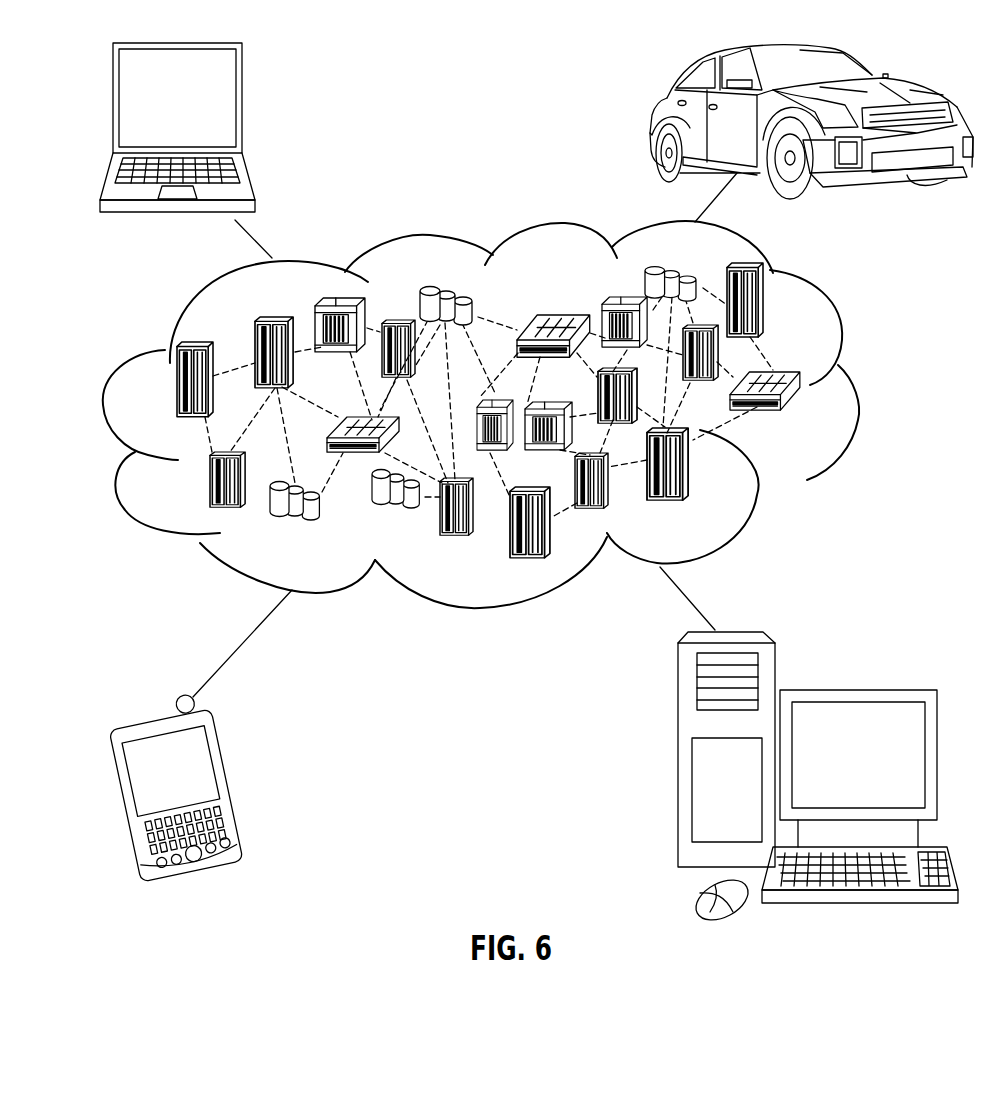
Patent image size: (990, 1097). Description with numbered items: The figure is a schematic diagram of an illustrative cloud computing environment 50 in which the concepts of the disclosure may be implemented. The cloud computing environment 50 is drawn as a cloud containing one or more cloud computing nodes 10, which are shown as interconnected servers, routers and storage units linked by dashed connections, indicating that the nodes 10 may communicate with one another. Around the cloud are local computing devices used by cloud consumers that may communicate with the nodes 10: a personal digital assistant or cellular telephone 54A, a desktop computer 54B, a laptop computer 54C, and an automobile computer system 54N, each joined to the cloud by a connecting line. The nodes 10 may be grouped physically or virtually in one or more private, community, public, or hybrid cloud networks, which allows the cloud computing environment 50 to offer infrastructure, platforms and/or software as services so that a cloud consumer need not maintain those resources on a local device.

The cloud computing nodes 10 is at (813, 432).
The cloud computing environment 50 is at (858, 388).
The personal digital assistant or cellular telephone 54A is at (233, 785).
The desktop computer 54B is at (857, 688).
The laptop computer 54C is at (242, 102).
The automobile computer system 54N is at (652, 120).